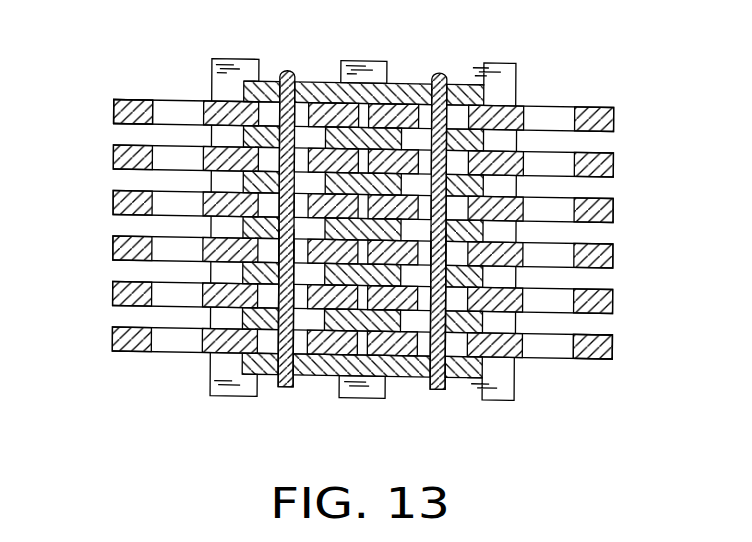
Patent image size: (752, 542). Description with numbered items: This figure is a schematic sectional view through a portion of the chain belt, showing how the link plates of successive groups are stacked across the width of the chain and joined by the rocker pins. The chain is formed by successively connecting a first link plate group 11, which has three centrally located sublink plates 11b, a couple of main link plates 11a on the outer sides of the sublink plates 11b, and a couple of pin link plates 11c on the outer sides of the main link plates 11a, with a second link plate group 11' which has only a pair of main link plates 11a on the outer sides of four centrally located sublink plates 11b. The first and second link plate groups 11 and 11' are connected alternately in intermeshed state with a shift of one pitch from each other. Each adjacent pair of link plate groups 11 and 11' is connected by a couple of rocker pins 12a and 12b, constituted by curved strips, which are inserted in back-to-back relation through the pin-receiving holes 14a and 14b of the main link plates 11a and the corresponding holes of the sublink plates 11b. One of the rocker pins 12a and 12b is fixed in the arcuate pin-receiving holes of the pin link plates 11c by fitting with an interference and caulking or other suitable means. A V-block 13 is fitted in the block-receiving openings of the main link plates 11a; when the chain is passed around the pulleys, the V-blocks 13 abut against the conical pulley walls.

The first link plate group 11 is at (359, 233).
The second link plate group 11' is at (337, 235).
The main link plate 11a is at (138, 104).
The sublink plate 11b is at (118, 294).
The pin link plate 11c is at (408, 86).
The rocker pin 12a is at (289, 72).
The rocker pin 12b is at (298, 372).
The V-block 13 is at (242, 62).
The front pin-receiving hole 14a is at (166, 121).
The rear pin-receiving hole 14b is at (220, 100).